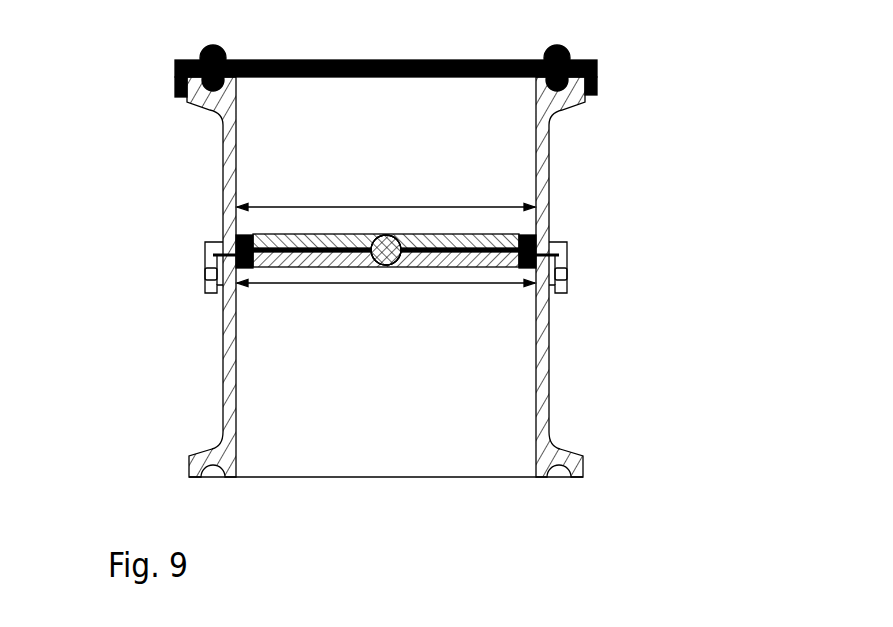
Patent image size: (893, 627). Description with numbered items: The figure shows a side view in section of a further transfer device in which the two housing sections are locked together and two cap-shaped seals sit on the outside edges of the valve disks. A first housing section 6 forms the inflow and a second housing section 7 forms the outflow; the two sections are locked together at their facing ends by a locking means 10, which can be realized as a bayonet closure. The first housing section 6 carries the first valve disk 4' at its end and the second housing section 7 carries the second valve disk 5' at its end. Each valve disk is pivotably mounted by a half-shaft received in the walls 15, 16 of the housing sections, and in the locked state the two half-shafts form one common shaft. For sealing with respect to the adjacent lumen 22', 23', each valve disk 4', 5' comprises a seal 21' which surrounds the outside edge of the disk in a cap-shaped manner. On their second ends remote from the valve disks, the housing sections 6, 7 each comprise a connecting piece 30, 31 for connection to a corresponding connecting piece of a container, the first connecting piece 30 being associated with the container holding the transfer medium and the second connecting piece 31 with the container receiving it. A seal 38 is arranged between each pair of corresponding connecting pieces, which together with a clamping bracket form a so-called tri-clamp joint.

The first valve disk 4' is at (467, 213).
The second valve disk 5' is at (465, 304).
The first housing section 6 is at (228, 182).
The second housing section 7 is at (233, 393).
The locking means 10 is at (195, 285).
The wall 15 is at (205, 250).
The wall 16 is at (548, 265).
The seal 21' is at (315, 211).
The lumen 22' is at (314, 153).
The lumen 23' is at (307, 317).
The first connecting piece 30 is at (175, 81).
The second connecting piece 31 is at (205, 460).
The seal 38 is at (568, 52).